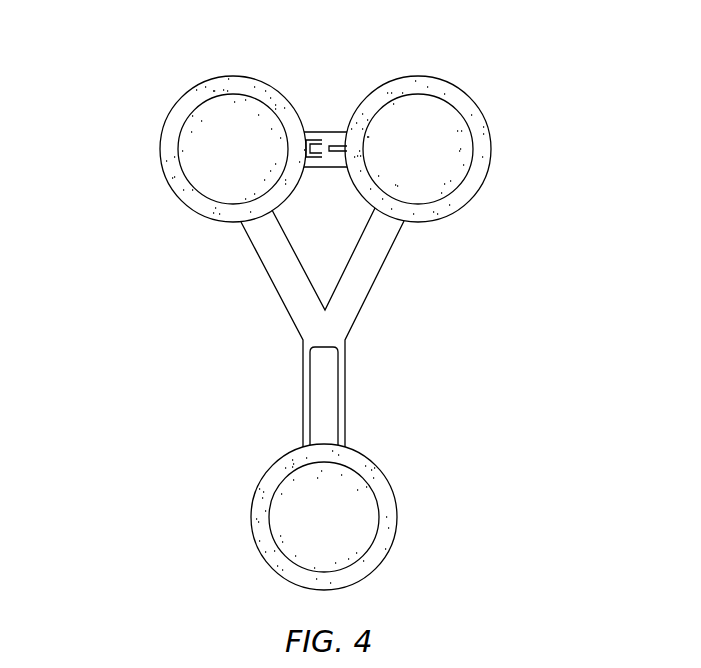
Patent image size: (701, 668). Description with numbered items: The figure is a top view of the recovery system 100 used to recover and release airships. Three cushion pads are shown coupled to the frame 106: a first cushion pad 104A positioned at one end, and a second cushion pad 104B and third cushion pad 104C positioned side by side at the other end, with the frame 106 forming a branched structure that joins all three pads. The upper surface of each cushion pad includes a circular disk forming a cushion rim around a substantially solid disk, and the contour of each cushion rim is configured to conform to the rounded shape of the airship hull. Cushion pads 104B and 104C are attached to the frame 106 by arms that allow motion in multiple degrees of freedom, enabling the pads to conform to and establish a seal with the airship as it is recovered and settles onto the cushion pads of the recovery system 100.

The recovery system 100 is at (127, 82).
The first cushion pad 104A is at (280, 517).
The second cushion pad 104B is at (190, 149).
The third cushion pad 104C is at (461, 149).
The frame 106 is at (367, 282).